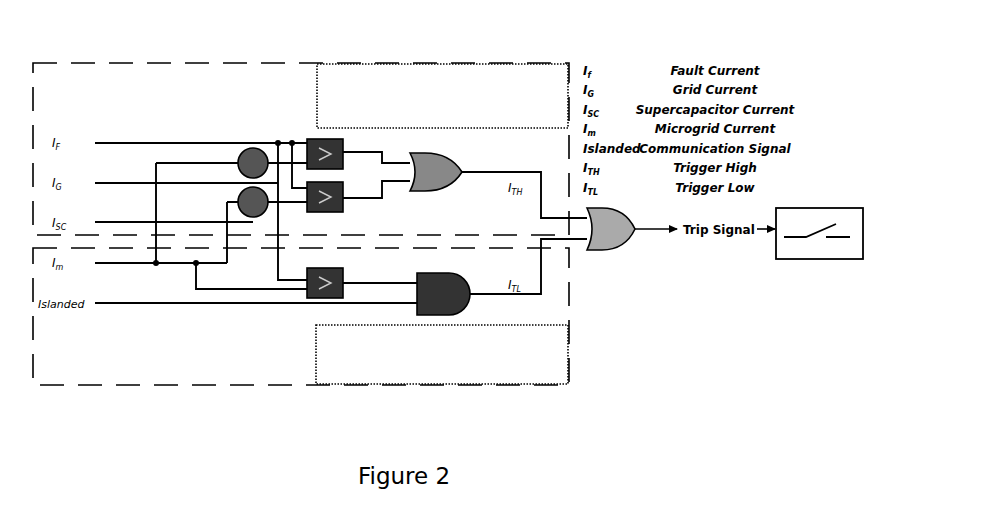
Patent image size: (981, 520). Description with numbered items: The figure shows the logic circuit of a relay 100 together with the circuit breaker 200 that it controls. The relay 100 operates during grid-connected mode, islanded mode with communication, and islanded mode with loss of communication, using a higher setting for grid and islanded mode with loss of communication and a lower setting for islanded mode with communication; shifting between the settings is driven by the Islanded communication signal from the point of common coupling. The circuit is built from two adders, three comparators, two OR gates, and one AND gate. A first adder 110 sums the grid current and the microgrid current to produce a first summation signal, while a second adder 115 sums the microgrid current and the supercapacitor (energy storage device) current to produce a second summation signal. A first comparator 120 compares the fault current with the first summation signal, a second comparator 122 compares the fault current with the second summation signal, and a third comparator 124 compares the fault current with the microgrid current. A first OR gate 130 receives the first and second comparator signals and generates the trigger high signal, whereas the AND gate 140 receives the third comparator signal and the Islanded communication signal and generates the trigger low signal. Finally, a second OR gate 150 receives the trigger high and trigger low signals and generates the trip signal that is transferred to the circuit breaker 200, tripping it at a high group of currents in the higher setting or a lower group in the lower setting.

The relay 100 is at (606, 322).
The first adder 110 is at (246, 150).
The second adder 115 is at (241, 195).
The first comparator 120 is at (308, 137).
The second comparator 122 is at (304, 214).
The third comparator 124 is at (305, 297).
The first OR gate 130 is at (456, 158).
The AND gate 140 is at (474, 308).
The second OR gate 150 is at (617, 253).
The circuit breaker 200 is at (812, 282).